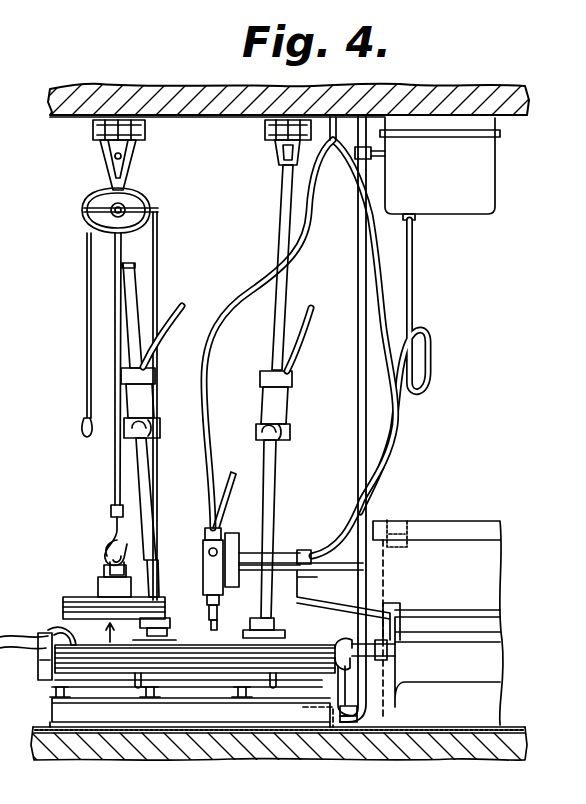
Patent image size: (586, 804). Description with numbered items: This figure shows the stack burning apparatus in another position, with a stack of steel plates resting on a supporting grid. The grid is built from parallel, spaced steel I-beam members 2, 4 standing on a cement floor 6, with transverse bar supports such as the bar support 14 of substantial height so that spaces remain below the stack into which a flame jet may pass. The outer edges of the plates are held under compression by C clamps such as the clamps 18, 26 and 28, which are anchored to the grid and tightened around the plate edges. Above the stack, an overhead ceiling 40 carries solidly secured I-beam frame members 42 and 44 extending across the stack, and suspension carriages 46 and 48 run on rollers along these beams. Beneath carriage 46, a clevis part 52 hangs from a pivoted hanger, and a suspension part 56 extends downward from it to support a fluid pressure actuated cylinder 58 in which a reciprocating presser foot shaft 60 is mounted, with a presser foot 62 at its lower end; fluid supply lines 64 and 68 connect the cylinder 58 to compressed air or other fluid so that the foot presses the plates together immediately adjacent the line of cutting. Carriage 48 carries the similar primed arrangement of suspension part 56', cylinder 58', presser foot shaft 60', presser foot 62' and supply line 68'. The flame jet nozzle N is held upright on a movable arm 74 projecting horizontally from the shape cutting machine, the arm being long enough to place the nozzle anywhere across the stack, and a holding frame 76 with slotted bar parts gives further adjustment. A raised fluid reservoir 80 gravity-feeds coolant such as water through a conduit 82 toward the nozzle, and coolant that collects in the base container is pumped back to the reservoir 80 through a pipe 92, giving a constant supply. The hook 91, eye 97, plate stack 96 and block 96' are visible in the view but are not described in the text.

The overhead ceiling 40 is at (528, 96).
The I-beam frame member 42 is at (85, 118).
The I-beam frame member 44 is at (270, 118).
The suspension carriage 46 is at (278, 152).
The suspension carriage 48 is at (140, 140).
The clevis part 52 is at (268, 188).
The suspension part 56 is at (299, 267).
The suspension part 56' is at (164, 315).
The fluid pressure actuated cylinder 58 is at (293, 397).
The fluid pressure actuated cylinder 58' is at (151, 362).
The presser foot shaft 60 is at (278, 529).
The presser foot shaft 60' is at (164, 517).
The presser foot 62 is at (275, 627).
The presser foot 62' is at (169, 619).
The fluid supply line 64 is at (304, 332).
The fluid supply line 68 is at (258, 419).
The fluid supply line 68' is at (142, 428).
The movable arm 74 is at (288, 564).
The holding frame 76 is at (222, 538).
The fluid reservoir 80 is at (496, 170).
The conduit 82 is at (413, 283).
The pipe 92 is at (357, 440).
The hook 91 is at (103, 548).
The eye 97 is at (90, 565).
The stack of plates 96 is at (96, 608).
The block 96' is at (82, 581).
The C clamp 18 is at (122, 633).
The flame jet nozzle N is at (226, 618).
The bar support 14 is at (498, 575).
The C clamp 26 is at (340, 635).
The C clamp 28 is at (34, 634).
The I-beam member 2 is at (52, 690).
The I-beam member 4 is at (52, 708).
The cement floor 6 is at (512, 730).